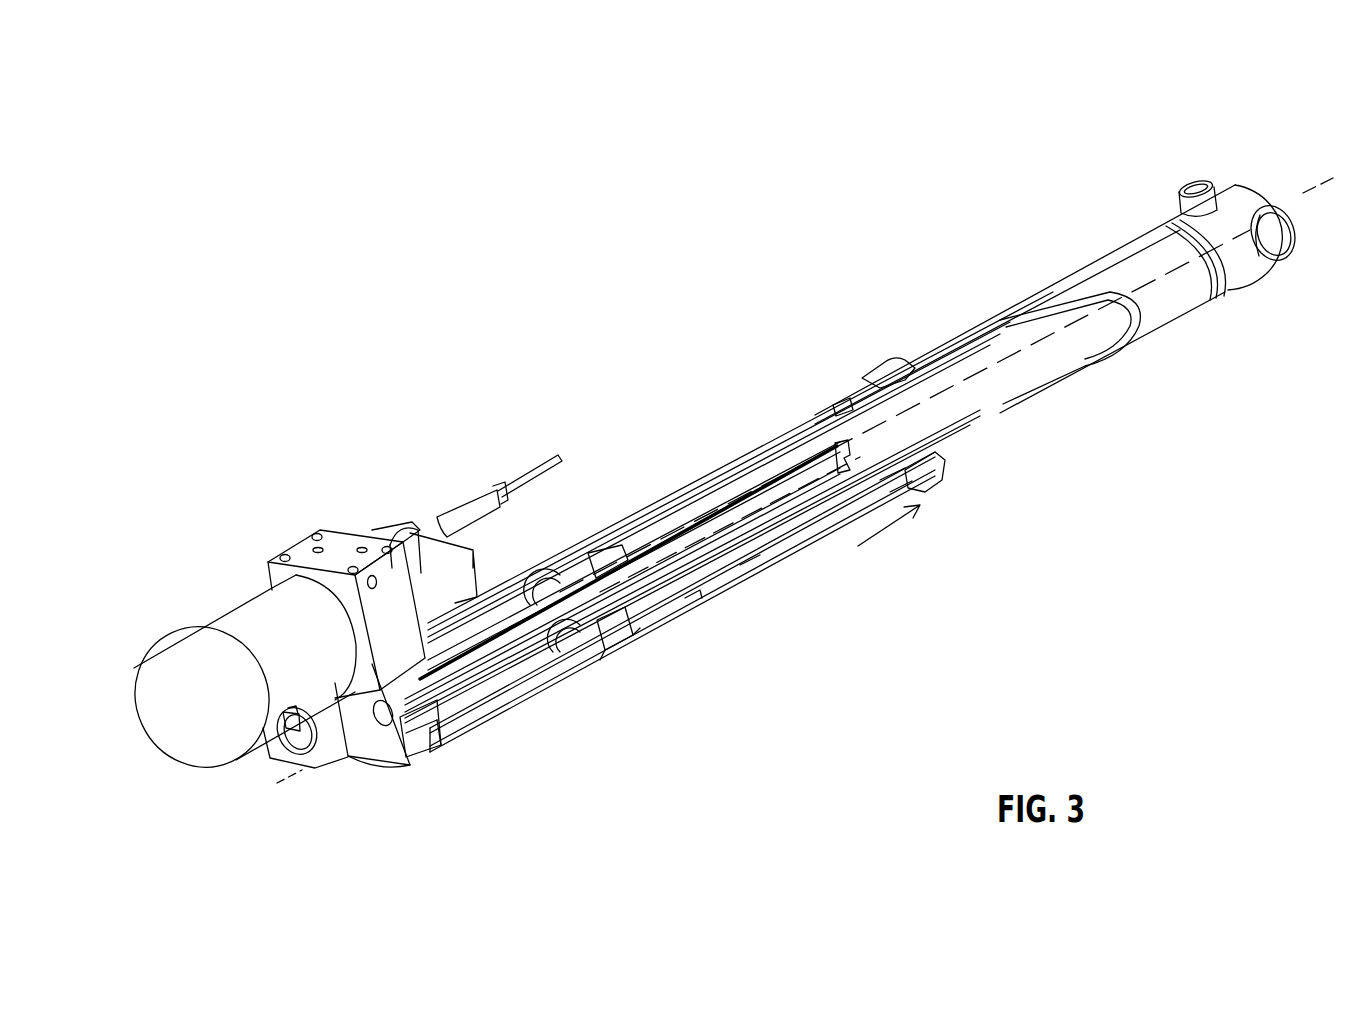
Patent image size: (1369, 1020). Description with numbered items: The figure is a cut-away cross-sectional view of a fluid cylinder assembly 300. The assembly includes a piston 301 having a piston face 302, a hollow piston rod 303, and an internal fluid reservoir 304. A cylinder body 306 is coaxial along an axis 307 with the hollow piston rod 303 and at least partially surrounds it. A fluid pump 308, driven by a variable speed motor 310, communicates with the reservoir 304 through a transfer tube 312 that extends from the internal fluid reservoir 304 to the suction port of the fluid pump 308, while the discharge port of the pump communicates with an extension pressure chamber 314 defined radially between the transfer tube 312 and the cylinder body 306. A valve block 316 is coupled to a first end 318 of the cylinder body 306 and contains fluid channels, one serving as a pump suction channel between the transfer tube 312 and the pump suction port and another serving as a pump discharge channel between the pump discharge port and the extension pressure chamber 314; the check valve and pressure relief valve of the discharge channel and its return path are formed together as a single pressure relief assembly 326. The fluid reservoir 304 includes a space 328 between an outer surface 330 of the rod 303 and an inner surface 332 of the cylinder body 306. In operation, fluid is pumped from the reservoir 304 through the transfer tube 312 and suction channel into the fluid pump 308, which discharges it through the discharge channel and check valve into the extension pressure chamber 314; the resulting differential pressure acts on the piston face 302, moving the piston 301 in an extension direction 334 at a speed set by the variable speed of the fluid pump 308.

The fluid cylinder assembly 300 is at (790, 212).
The piston 301 is at (612, 633).
The piston face 302 is at (560, 670).
The hollow piston rod 303 is at (1088, 262).
The internal fluid reservoir 304 is at (1005, 385).
The cylinder body 306 is at (697, 478).
The axis 307 is at (1314, 184).
The fluid pump 308 is at (478, 562).
The variable speed motor 310 is at (191, 634).
The transfer tube 312 is at (512, 692).
The extension pressure chamber 314 is at (455, 720).
The valve block 316 is at (386, 775).
The first end 318 is at (500, 742).
The pressure relief assembly 326 is at (412, 530).
The space 328 is at (747, 566).
The outer surface 330 is at (801, 541).
The inner surface 332 is at (690, 596).
The extension direction 334 is at (890, 529).